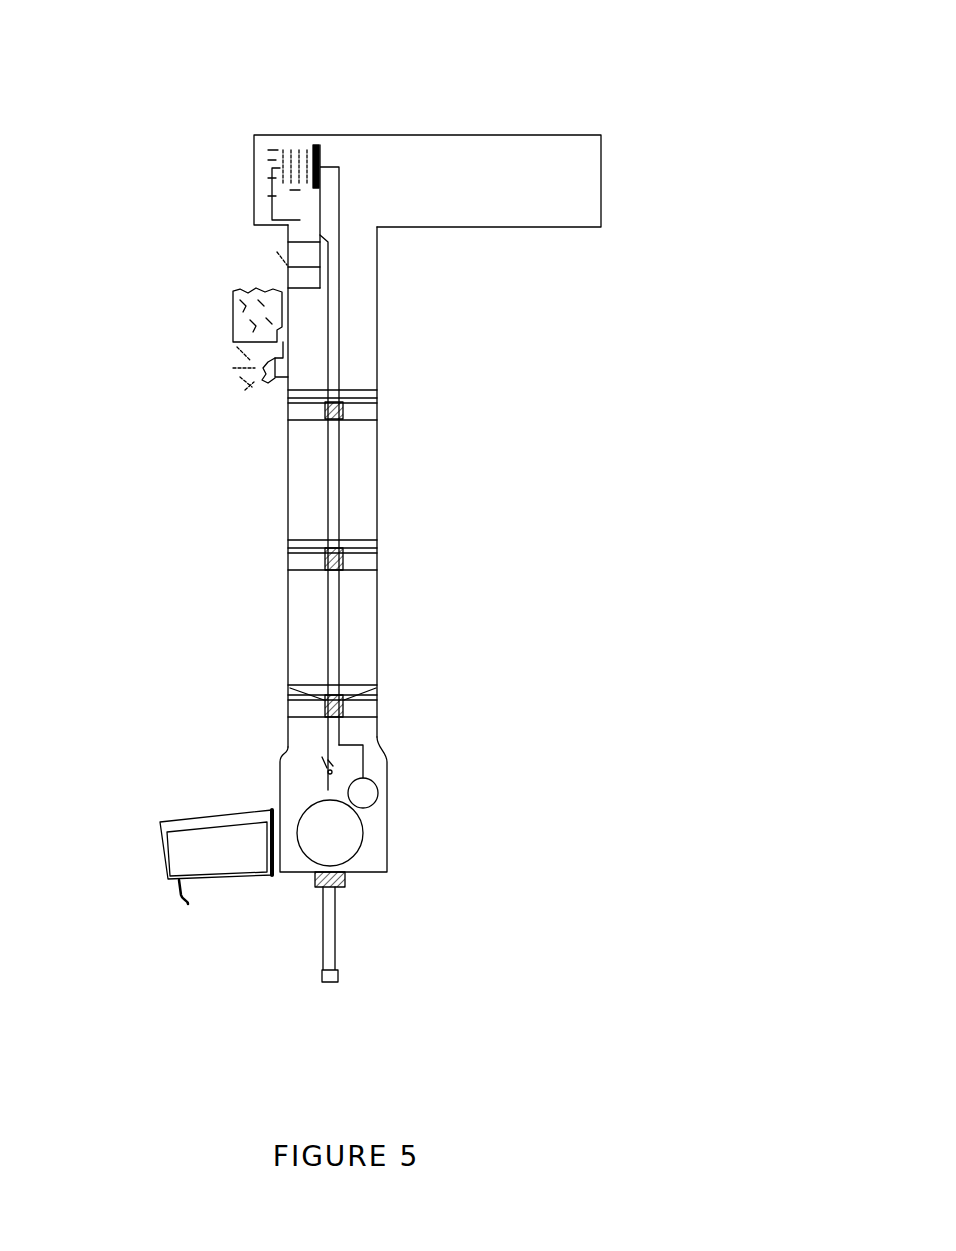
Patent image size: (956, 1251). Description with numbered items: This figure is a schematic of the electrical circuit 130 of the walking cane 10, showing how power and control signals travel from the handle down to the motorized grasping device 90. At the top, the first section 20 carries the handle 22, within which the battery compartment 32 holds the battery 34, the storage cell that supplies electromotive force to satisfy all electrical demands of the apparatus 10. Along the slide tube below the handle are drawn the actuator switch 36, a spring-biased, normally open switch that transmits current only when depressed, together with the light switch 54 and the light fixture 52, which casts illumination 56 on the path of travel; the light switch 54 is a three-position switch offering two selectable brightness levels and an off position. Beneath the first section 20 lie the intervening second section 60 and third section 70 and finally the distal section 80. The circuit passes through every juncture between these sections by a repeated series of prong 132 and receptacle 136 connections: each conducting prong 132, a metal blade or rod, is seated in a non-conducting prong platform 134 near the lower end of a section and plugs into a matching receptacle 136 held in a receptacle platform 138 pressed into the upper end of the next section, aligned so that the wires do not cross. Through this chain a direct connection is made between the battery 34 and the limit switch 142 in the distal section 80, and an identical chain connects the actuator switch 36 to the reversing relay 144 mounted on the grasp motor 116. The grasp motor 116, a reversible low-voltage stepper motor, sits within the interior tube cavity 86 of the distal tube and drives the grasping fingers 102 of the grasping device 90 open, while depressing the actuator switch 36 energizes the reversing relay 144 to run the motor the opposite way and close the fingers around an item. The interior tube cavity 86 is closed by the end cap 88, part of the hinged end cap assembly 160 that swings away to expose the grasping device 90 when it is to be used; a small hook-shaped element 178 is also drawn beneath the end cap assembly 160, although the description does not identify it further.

The walking cane 10 is at (158, 95).
The first section 20 is at (675, 170).
The handle 22 is at (483, 133).
The battery compartment 32 is at (317, 148).
The battery 34 is at (287, 155).
The actuator switch 36 is at (277, 252).
The light fixture 52 is at (277, 383).
The light switch 54 is at (237, 295).
The illumination 56 is at (232, 366).
The second section 60 is at (428, 483).
The third section 70 is at (407, 620).
The distal section 80 is at (502, 792).
The interior tube cavity 86 is at (372, 753).
The end cap 88 is at (160, 822).
The grasping device 90 is at (382, 910).
The grasping fingers 102 is at (330, 930).
The grasp motor 116 is at (352, 837).
The electrical circuit 130 is at (212, 498).
The prong 132 is at (325, 703).
The prong platform 134 is at (378, 697).
The receptacle 136 is at (343, 707).
The receptacle platform 138 is at (318, 714).
The limit switch 142 is at (320, 770).
The reversing relay 144 is at (376, 790).
The end cap assembly 160 is at (167, 893).
The hook 178 is at (185, 907).